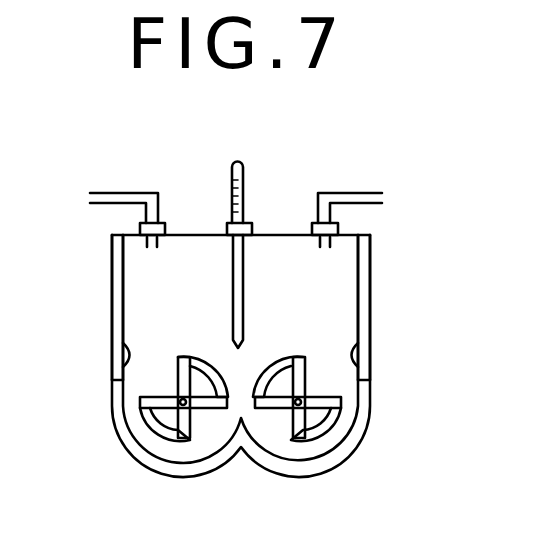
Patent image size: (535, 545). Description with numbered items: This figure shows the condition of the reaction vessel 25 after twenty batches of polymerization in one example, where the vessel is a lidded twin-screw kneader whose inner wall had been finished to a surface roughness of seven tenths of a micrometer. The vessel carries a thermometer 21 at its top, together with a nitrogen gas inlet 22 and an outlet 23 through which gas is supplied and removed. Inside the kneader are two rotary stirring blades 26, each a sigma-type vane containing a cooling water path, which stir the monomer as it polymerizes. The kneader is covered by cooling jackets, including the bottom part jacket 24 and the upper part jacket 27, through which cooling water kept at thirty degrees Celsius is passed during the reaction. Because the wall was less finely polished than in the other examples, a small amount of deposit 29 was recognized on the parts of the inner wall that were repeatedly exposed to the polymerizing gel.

The thermometer 21 is at (238, 162).
The nitrogen gas inlet 22 is at (358, 193).
The outlet 23 is at (118, 192).
The bottom part jacket 24 is at (352, 452).
The reaction vessel 25 is at (123, 275).
The rotary stirring blades 26 is at (300, 357).
The upper part jacket 27 is at (372, 275).
The deposit 29 is at (126, 350).